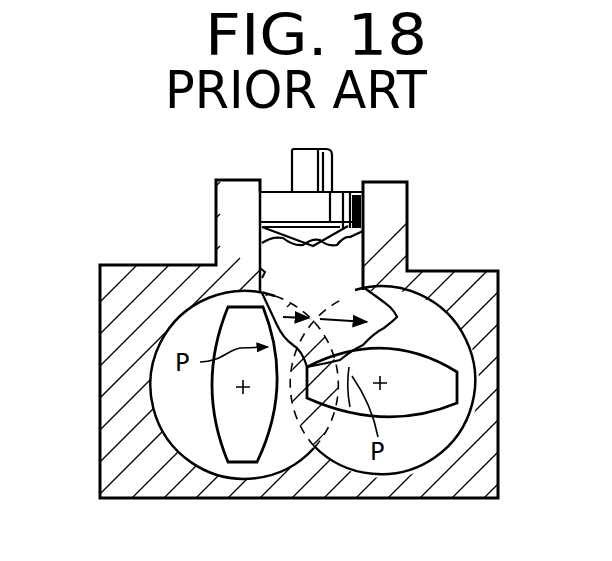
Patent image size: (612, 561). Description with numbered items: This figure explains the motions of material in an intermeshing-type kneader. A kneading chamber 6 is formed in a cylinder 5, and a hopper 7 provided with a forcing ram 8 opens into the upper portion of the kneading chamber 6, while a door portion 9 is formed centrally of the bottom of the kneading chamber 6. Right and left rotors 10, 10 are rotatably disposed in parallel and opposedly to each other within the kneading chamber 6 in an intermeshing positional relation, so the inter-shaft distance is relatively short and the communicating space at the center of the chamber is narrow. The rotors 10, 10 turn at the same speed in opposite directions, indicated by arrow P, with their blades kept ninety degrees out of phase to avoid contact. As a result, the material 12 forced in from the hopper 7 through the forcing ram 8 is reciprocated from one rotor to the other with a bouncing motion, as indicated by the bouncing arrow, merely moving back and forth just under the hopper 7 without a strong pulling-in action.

The cylinder 5 is at (98, 266).
The kneading chamber 6 is at (210, 312).
The hopper 7 is at (343, 182).
The forcing ram 8 is at (285, 205).
The door portion 9 is at (321, 448).
The kneading rotors 10 is at (222, 427).
The material 12 is at (340, 257).